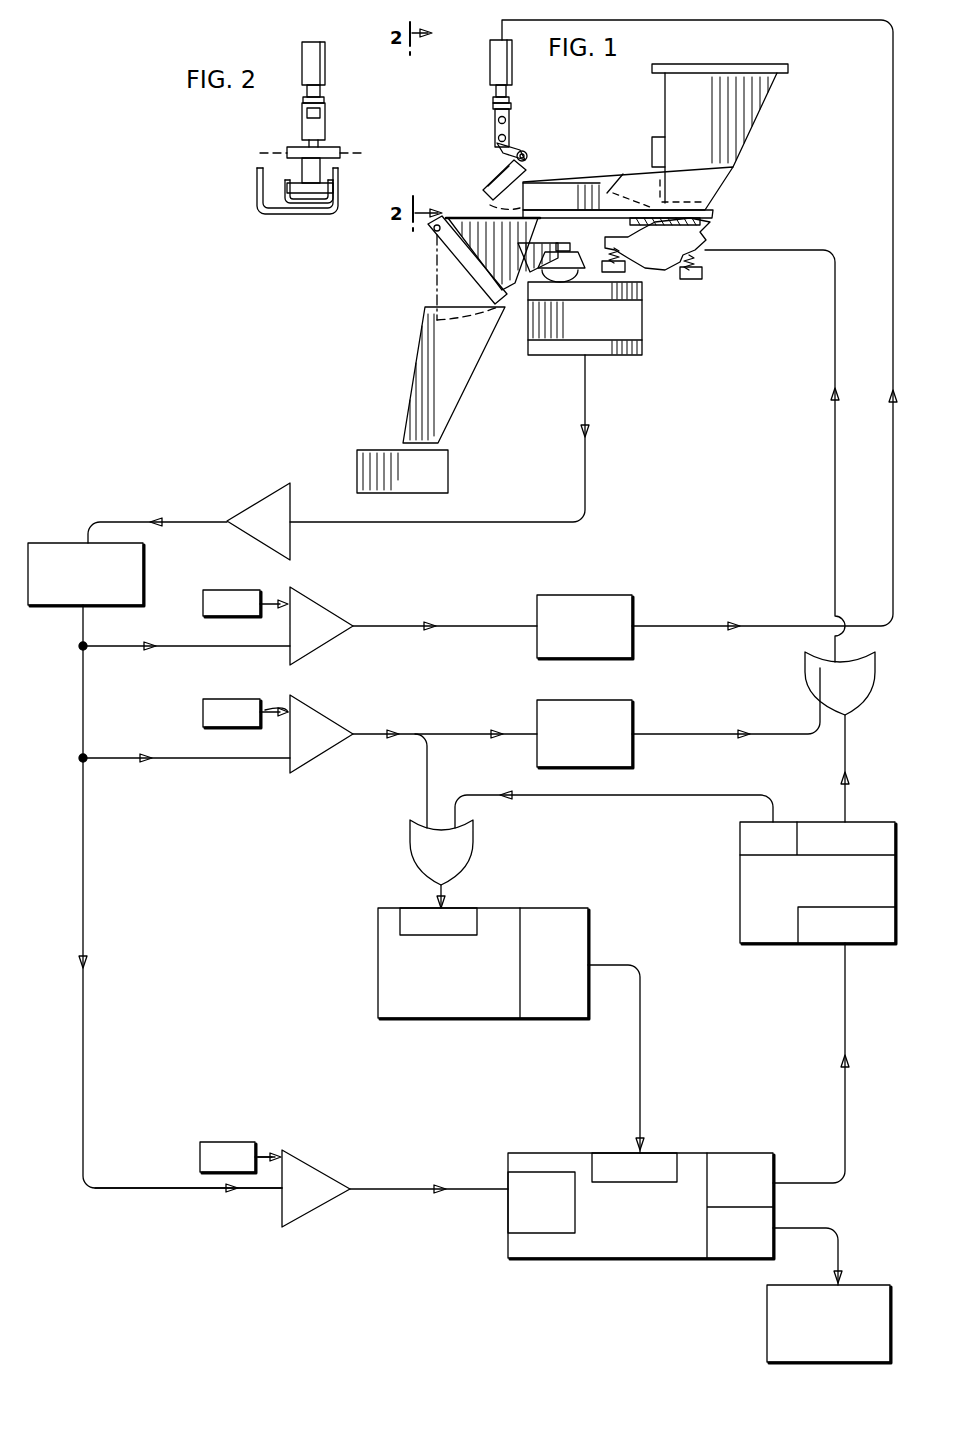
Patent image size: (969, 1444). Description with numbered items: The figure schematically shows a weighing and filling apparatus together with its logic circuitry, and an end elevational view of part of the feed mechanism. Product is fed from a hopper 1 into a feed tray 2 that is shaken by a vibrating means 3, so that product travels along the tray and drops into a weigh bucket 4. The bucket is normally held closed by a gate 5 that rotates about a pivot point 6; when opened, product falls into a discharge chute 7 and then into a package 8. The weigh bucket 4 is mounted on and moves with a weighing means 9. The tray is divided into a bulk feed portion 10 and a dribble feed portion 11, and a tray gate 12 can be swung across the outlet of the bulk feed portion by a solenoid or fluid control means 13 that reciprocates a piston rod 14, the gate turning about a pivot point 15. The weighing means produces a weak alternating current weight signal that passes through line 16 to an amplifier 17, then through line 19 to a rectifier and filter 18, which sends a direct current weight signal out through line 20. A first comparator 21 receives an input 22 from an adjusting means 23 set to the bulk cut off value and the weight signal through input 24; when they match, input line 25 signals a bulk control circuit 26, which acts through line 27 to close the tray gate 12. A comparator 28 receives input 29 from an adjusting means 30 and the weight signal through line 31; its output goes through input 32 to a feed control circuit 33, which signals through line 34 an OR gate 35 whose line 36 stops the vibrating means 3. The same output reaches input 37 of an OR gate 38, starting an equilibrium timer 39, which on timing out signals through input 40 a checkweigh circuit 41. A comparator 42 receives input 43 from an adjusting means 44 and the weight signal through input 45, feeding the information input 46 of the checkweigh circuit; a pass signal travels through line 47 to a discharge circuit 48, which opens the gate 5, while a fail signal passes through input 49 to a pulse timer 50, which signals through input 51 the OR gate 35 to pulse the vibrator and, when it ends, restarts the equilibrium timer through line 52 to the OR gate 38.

In FIG. 1, the hopper 1 is at (745, 133).
In FIG. 1, the feed tray 2 is at (578, 178).
In FIG. 2, the feed tray 2 is at (290, 224).
In FIG. 1, the vibrating means 3 is at (712, 236).
In FIG. 1, the weigh bucket 4 is at (478, 218).
In FIG. 1, the gate 5 is at (458, 264).
In FIG. 1, the pivot point 6 is at (433, 231).
In FIG. 1, the discharge chute 7 is at (420, 363).
In FIG. 1, the package 8 is at (362, 457).
In FIG. 1, the weighing means 9 is at (640, 322).
In FIG. 2, the bulk feed portion 10 is at (314, 206).
In FIG. 2, the dribble feed portion 11 is at (270, 208).
In FIG. 1, the tray gate 12 is at (492, 178).
In FIG. 2, the tray gate 12 is at (335, 186).
In FIG. 1, the solenoid or fluid control means 13 is at (490, 60).
In FIG. 2, the solenoid or fluid control means 13 is at (326, 62).
In FIG. 1, the piston rod 14 is at (496, 92).
In FIG. 2, the piston rod 14 is at (322, 91).
In FIG. 1, the pivot point 15 is at (528, 151).
In FIG. 2, the pivot point 15 is at (340, 150).
In FIG. 1, the line 16 is at (500, 525).
In FIG. 1, the amplifier 17 is at (275, 500).
In FIG. 1, the rectifier and filter 18 is at (55, 552).
In FIG. 1, the line 19 is at (125, 520).
In FIG. 1, the line 20 is at (83, 870).
In FIG. 1, the first comparator 21 is at (325, 610).
In FIG. 1, the input 22 is at (265, 612).
In FIG. 1, the adjusting means 23 is at (203, 610).
In FIG. 1, the input 24 is at (197, 646).
In FIG. 1, the input line 25 is at (500, 628).
In FIG. 1, the bulk control circuit 26 is at (636, 605).
In FIG. 1, the line 27 is at (893, 452).
In FIG. 1, the comparator 28 is at (312, 757).
In FIG. 1, the input 29 is at (270, 708).
In FIG. 1, the adjusting means 30 is at (203, 722).
In FIG. 1, the line 31 is at (206, 760).
In FIG. 1, the input 32 is at (452, 734).
In FIG. 1, the feed control circuit 33 is at (635, 706).
In FIG. 1, the line 34 is at (768, 734).
In FIG. 1, the OR gate 35 is at (812, 676).
In FIG. 1, the line 36 is at (830, 374).
In FIG. 1, the input 37 is at (427, 773).
In FIG. 1, the OR gate 38 is at (476, 848).
In FIG. 1, the equilibrium timer 39 is at (378, 982).
In FIG. 1, the input 40 is at (640, 1058).
In FIG. 1, the checkweigh circuit 41 is at (570, 1153).
In FIG. 1, the comparator 42 is at (320, 1180).
In FIG. 1, the input 43 is at (262, 1152).
In FIG. 1, the adjusting means 44 is at (200, 1150).
In FIG. 1, the input 45 is at (242, 1190).
In FIG. 1, the input 46 is at (477, 1190).
In FIG. 1, the line 47 is at (805, 1228).
In FIG. 1, the discharge circuit 48 is at (767, 1318).
In FIG. 1, the input 49 is at (845, 1022).
In FIG. 1, the pulse timer 50 is at (740, 892).
In FIG. 1, the input 51 is at (845, 760).
In FIG. 1, the line 52 is at (640, 797).